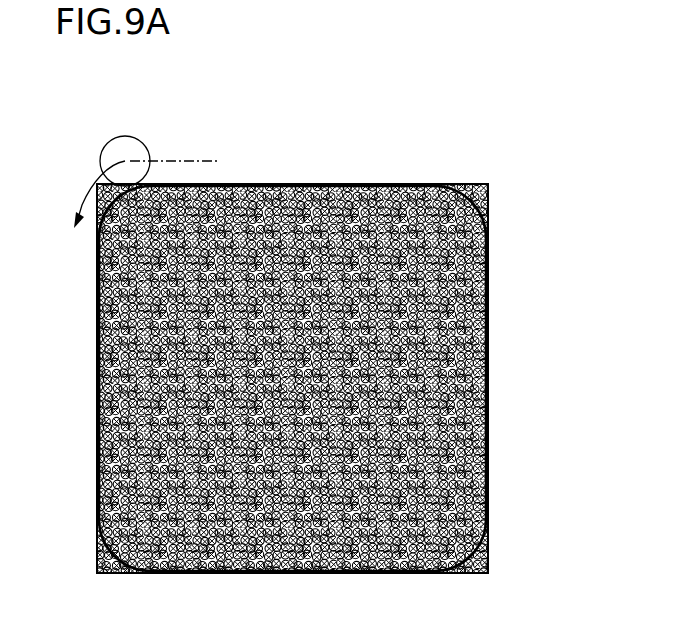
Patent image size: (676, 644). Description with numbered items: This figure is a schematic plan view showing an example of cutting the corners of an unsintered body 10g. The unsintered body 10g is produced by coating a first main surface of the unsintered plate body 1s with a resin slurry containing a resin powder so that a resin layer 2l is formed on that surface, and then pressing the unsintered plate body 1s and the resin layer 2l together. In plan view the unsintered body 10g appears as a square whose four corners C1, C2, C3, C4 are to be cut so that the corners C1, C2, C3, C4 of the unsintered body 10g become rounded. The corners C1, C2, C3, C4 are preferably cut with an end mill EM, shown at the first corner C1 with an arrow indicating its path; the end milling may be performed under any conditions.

The unsintered body 10g is at (498, 101).
The unsintered plate body 1s is at (488, 338).
The resin layer 2l is at (488, 262).
The end mill EM is at (131, 147).
The corner C1 is at (97, 184).
The corner C2 is at (97, 573).
The corner C3 is at (488, 573).
The corner C4 is at (488, 184).